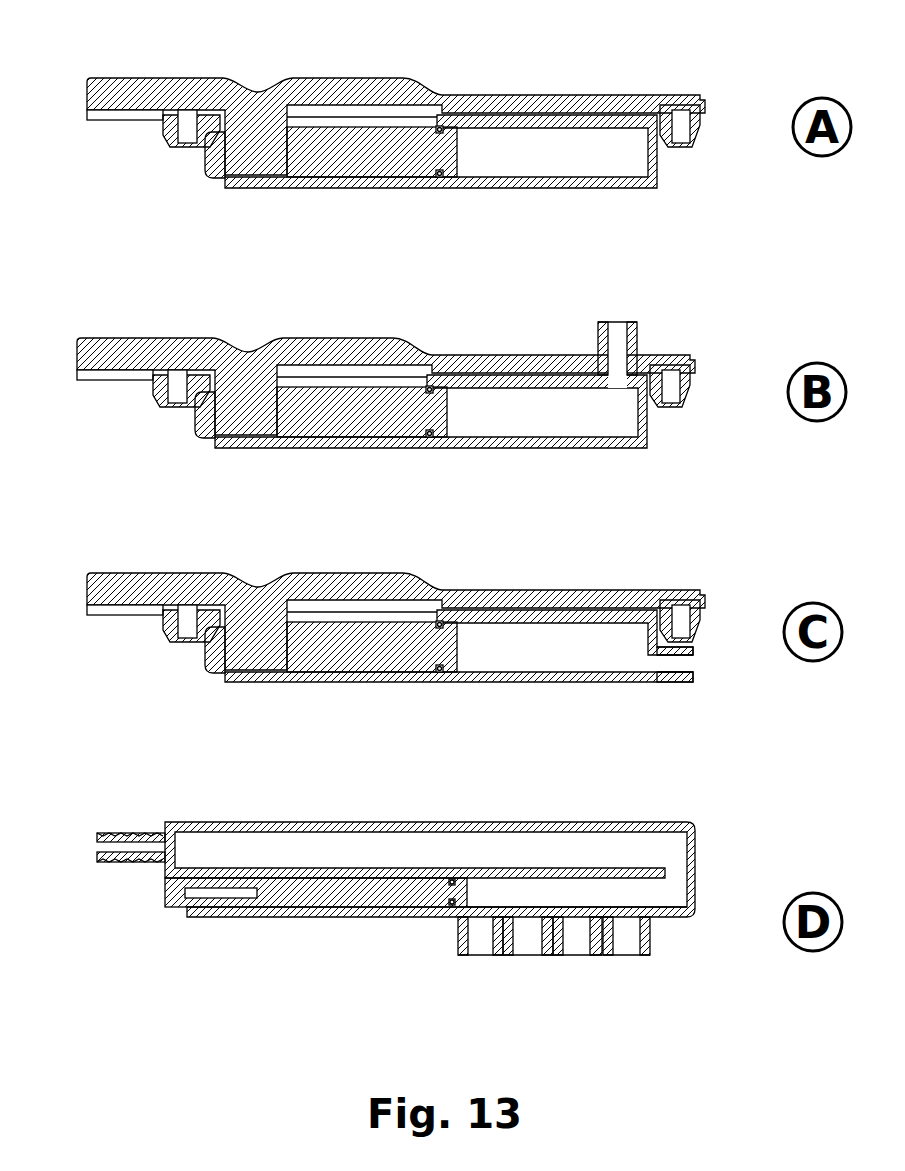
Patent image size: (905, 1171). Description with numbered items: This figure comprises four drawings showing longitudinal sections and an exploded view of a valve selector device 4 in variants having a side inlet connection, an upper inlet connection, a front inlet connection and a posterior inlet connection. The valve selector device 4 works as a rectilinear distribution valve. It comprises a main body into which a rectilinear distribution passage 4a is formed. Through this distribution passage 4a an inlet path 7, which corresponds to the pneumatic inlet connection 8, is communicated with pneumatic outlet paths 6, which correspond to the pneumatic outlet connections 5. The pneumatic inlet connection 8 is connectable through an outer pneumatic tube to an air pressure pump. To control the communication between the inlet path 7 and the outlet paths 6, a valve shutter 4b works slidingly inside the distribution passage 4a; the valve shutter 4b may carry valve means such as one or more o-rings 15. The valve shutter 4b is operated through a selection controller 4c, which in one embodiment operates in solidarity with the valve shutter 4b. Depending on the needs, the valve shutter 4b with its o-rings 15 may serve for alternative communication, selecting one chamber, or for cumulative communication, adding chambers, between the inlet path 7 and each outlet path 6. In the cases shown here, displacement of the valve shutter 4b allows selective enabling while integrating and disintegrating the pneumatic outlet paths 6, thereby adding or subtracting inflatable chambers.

The valve selector device 4 is at (147, 133).
The rectilinear distribution passage 4a is at (578, 163).
The valve shutter 4b is at (118, 942).
The selection controller 4c is at (265, 88).
The pneumatic outlet connections 5 is at (662, 940).
The pneumatic outlet paths 6 is at (476, 962).
The inlet path 7 is at (464, 584).
The pneumatic inlet connection 8 is at (384, 564).
The o-rings 15 is at (438, 182).